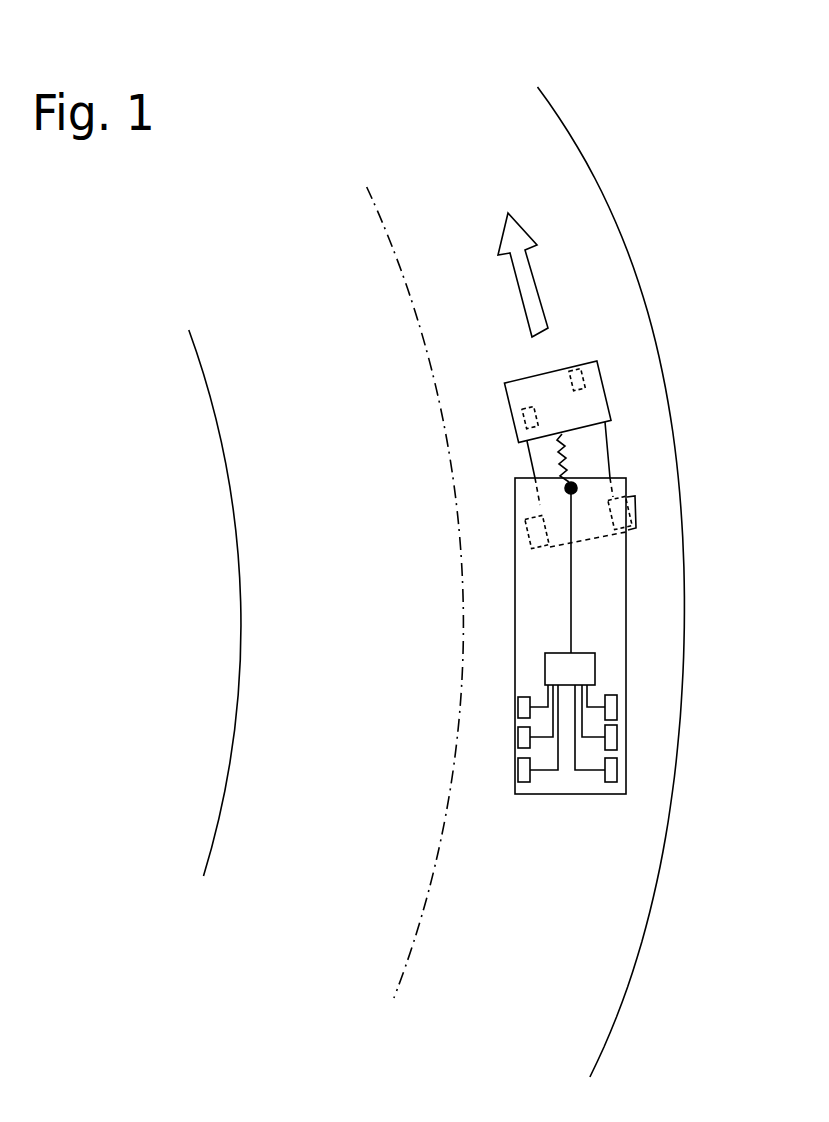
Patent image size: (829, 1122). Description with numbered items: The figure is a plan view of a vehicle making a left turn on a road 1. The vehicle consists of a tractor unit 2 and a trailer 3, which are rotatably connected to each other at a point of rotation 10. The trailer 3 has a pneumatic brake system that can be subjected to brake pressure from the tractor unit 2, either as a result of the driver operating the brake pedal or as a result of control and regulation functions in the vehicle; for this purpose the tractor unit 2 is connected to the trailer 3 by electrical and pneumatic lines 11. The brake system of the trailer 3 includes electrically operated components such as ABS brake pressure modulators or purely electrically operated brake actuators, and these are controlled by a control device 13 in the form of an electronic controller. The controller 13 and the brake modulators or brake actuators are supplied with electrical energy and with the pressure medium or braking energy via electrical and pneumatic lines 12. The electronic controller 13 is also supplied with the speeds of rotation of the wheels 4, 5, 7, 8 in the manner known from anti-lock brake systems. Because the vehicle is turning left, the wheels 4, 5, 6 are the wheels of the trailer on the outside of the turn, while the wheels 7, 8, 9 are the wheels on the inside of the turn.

The road 1 is at (538, 907).
The tractor unit 2 is at (602, 362).
The trailer 3 is at (515, 608).
The wheel 4 is at (617, 765).
The wheel 5 is at (617, 733).
The wheel 6 is at (617, 702).
The wheel 7 is at (518, 775).
The wheel 8 is at (518, 737).
The wheel 9 is at (518, 705).
The point of rotation 10 is at (580, 470).
The electrical and pneumatic lines 11 is at (567, 470).
The electrical and pneumatic lines 12 is at (570, 592).
The control device 13 is at (595, 667).